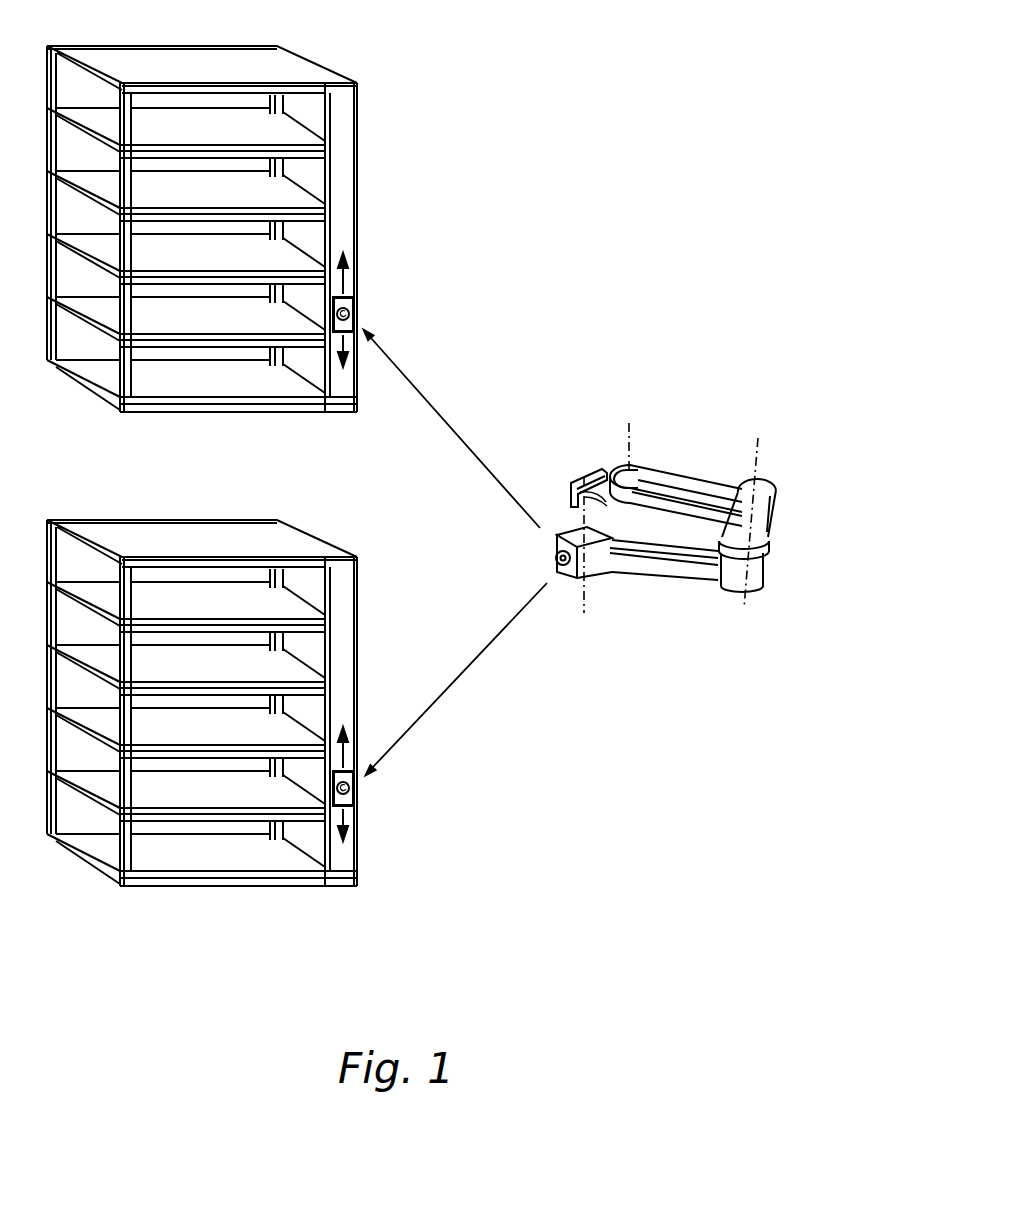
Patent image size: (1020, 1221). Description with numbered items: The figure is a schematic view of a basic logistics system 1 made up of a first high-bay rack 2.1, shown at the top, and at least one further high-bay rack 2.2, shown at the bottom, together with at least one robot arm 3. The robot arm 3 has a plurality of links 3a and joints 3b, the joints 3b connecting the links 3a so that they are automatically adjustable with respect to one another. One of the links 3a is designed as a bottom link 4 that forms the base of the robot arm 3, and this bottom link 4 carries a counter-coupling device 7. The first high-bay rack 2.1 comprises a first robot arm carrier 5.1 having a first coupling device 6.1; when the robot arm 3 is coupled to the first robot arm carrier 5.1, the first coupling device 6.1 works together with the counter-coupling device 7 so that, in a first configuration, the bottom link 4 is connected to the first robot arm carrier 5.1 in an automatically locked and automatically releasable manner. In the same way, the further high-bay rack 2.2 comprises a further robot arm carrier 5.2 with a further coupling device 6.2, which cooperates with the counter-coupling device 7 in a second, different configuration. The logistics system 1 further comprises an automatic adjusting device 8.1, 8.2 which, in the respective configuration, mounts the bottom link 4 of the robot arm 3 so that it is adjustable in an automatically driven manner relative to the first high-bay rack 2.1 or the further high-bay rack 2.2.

The logistics system 1 is at (600, 186).
The first high-bay rack 2.1 is at (328, 78).
The further high-bay rack 2.2 is at (326, 536).
The robot arm 3 is at (707, 534).
The links 3a is at (688, 485).
The joints 3b is at (628, 435).
The bottom link 4 is at (566, 530).
The first robot arm carrier 5.1 is at (360, 328).
The further robot arm carrier 5.2 is at (355, 808).
The first coupling device 6.1 is at (355, 310).
The further coupling device 6.2 is at (355, 768).
The counter-coupling device 7 is at (558, 580).
The automatic adjusting device 8.1 is at (345, 132).
The automatic adjusting device 8.2 is at (345, 598).